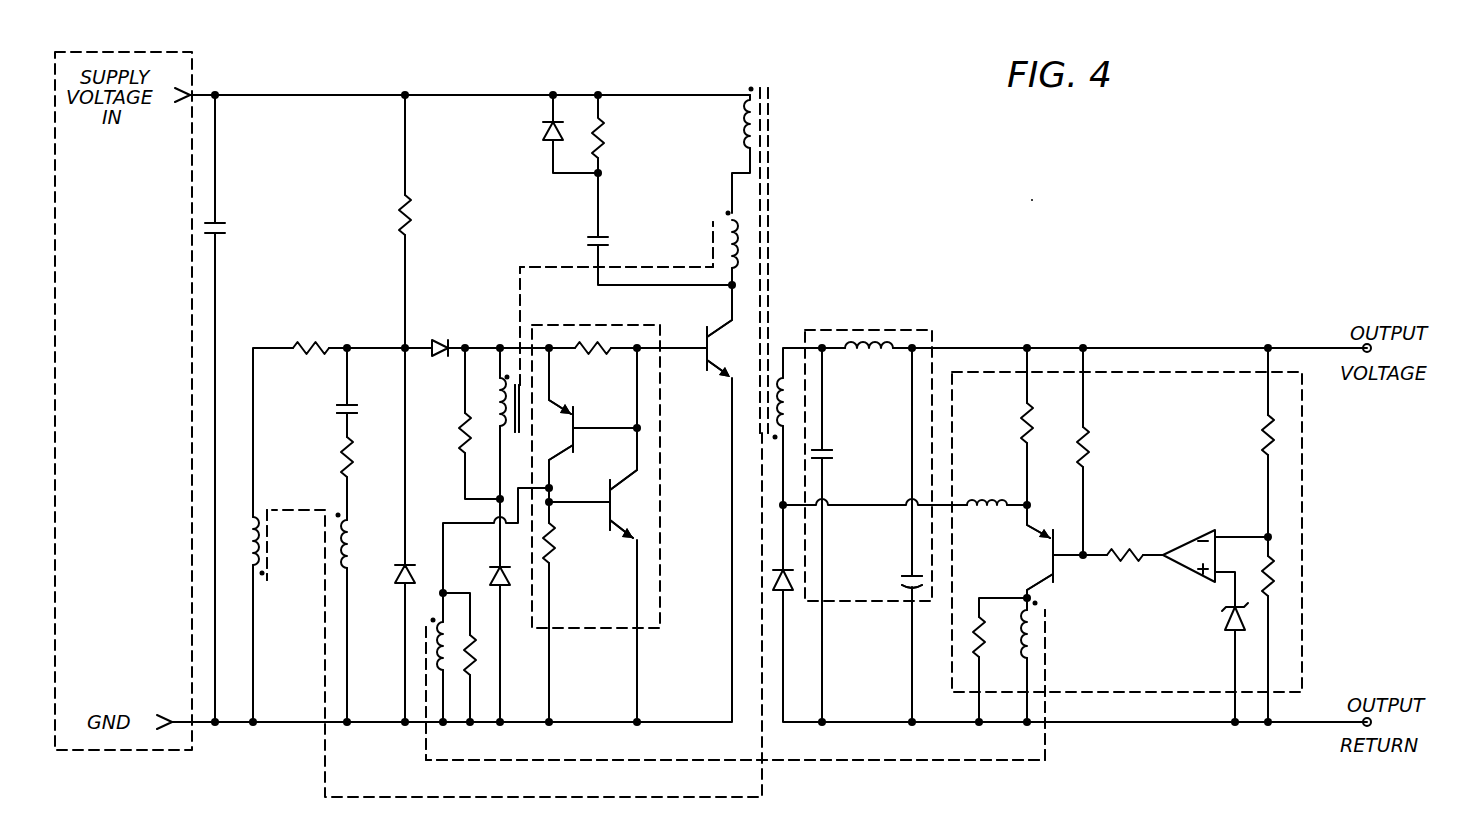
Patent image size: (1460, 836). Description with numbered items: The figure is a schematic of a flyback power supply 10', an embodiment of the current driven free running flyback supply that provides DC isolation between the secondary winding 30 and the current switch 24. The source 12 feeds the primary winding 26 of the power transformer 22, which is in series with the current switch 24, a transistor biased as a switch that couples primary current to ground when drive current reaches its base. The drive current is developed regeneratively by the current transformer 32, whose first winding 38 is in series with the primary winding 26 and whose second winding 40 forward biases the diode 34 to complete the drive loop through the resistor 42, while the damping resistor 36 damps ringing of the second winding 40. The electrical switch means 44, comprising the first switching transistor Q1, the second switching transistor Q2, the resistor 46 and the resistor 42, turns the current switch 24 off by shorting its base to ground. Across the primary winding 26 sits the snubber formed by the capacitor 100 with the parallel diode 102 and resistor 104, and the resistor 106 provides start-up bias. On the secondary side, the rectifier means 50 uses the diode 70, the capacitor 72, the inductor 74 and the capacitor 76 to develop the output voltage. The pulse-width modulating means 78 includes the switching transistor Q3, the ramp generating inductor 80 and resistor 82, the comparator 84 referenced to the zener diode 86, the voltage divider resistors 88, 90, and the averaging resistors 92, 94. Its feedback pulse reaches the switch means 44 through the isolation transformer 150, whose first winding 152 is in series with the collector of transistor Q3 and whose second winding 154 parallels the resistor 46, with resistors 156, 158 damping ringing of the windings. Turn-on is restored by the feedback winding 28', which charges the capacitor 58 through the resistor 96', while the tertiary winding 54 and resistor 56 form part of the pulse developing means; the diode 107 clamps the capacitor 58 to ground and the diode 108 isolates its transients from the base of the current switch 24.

The flyback power supply 10' is at (1078, 176).
The source 12 is at (192, 70).
The power transformer 22 is at (766, 90).
The current switch 24 is at (708, 368).
The primary winding 26 is at (743, 124).
The feedback winding 28' is at (279, 521).
The secondary winding 30 is at (787, 400).
The current transformer 32 is at (520, 266).
The diode 34 is at (503, 595).
The damping resistor 36 is at (460, 416).
The first winding 38 is at (726, 222).
The second winding 40 is at (500, 378).
The resistor 42 is at (580, 356).
The electrical switch means 44 is at (615, 325).
The resistor 46 is at (557, 550).
The rectifier means 50 is at (860, 340).
The tertiary winding 54 is at (353, 522).
The resistor 56 is at (366, 455).
The capacitor 58 is at (350, 404).
The diode 70 is at (788, 594).
The capacitor 72 is at (828, 448).
The inductor 74 is at (925, 318).
The capacitor 76 is at (902, 584).
The pulse-width modulating means 78 is at (1128, 378).
The inductor 80 is at (1004, 470).
The resistor 82 is at (1020, 418).
The comparator 84 is at (1212, 530).
The zener diode 86 is at (1226, 620).
The resistor 88 is at (1262, 432).
The resistor 90 is at (1264, 564).
The resistor 92 is at (1088, 434).
The resistor 94 is at (1138, 546).
The resistor 96' is at (308, 325).
The capacitor 100 is at (586, 242).
The diode 102 is at (547, 132).
The resistor 104 is at (603, 136).
The resistor 106 is at (411, 202).
The diode 107 is at (404, 595).
The diode 108 is at (450, 322).
The isolation transformer 150 is at (657, 760).
The first winding 152 is at (1040, 655).
The second winding 154 is at (436, 682).
The resistor 156 is at (970, 612).
The resistor 158 is at (478, 668).
The first switching transistor Q1 is at (630, 504).
The second switching transistor Q2 is at (555, 430).
The switching transistor Q3 is at (1027, 557).